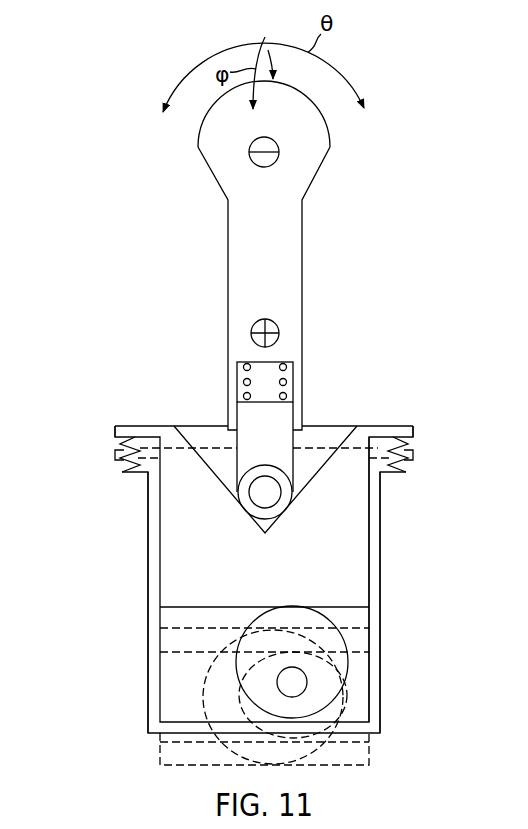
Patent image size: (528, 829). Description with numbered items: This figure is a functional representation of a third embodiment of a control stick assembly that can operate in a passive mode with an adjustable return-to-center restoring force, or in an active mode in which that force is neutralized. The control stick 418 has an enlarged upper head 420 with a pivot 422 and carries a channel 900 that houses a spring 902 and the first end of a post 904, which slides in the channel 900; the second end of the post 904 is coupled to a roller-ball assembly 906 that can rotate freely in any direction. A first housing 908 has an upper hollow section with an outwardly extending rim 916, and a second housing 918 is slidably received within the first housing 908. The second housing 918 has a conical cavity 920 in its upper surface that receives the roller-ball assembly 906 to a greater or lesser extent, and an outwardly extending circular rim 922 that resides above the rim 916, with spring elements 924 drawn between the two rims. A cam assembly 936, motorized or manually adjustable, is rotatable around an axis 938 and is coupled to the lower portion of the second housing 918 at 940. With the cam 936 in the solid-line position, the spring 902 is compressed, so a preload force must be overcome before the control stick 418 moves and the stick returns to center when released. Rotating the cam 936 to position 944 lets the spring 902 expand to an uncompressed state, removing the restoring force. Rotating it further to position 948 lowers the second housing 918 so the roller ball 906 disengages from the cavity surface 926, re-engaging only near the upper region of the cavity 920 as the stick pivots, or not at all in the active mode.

The head of arm 420 is at (331, 137).
The control stick 418 is at (247, 237).
The pivot 422 is at (253, 325).
The channel 900 is at (262, 364).
The spring 902 is at (286, 383).
The post 904 is at (285, 415).
The roller-ball assembly 906 is at (262, 494).
The cavity surface 926 is at (307, 485).
The conical cavity 920 is at (222, 460).
The circular rim 922 is at (122, 425).
The spring 924 is at (115, 455).
The first housing 908 is at (148, 505).
The rim 916 is at (400, 472).
The second housing 918 is at (357, 566).
The coupling location 940 is at (293, 607).
The cam assembly 936 is at (335, 618).
The axis 938 is at (297, 684).
The cam position 944 is at (207, 683).
The cam position 948 is at (352, 712).